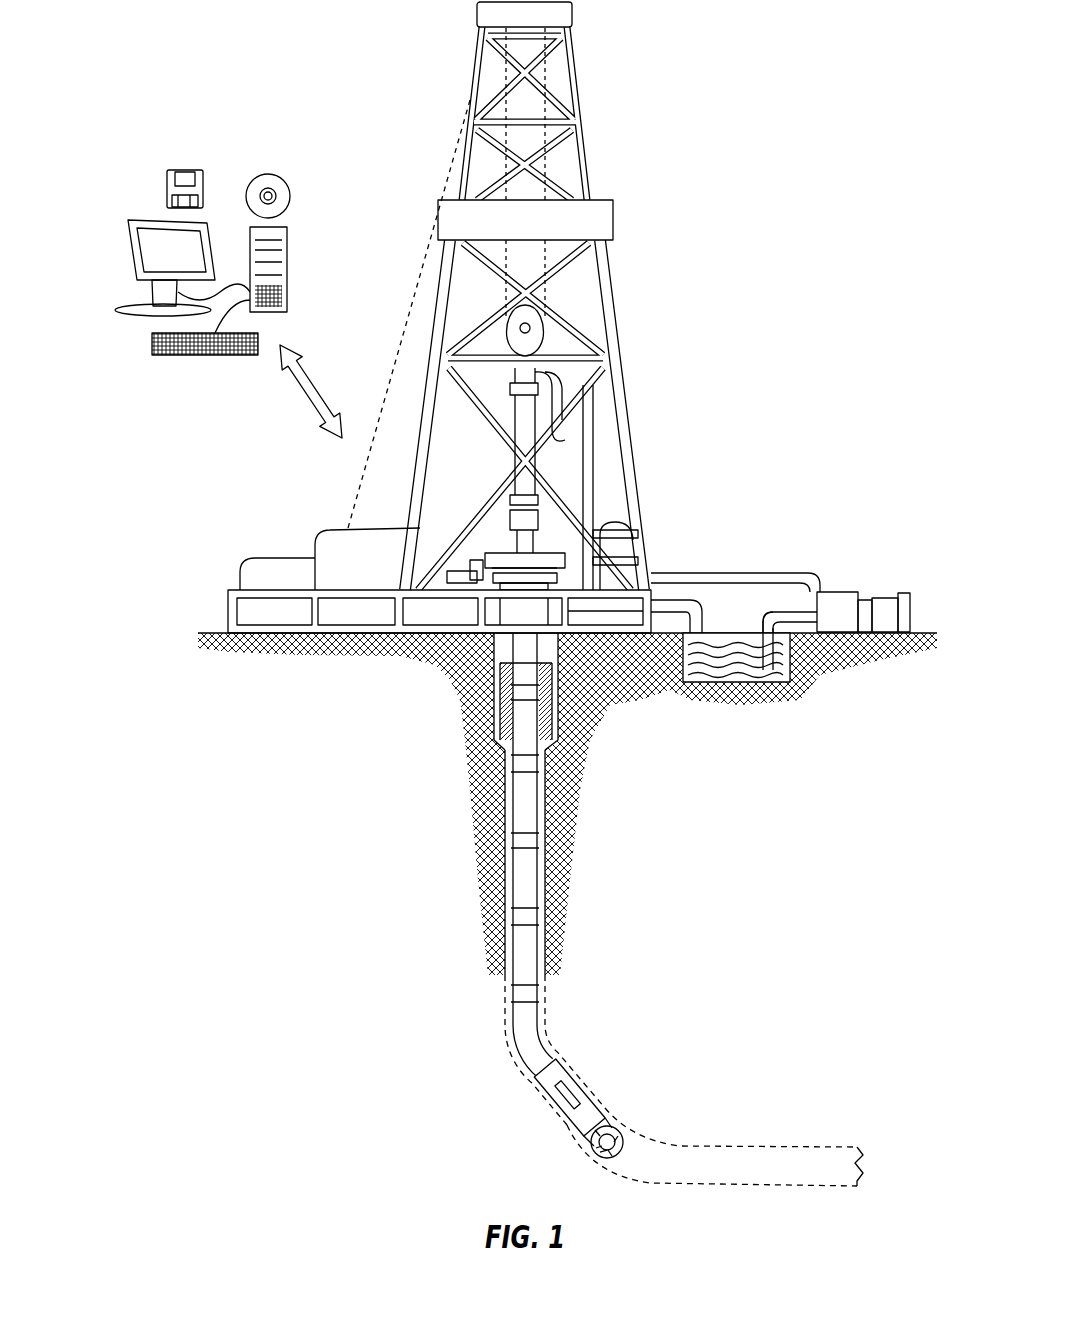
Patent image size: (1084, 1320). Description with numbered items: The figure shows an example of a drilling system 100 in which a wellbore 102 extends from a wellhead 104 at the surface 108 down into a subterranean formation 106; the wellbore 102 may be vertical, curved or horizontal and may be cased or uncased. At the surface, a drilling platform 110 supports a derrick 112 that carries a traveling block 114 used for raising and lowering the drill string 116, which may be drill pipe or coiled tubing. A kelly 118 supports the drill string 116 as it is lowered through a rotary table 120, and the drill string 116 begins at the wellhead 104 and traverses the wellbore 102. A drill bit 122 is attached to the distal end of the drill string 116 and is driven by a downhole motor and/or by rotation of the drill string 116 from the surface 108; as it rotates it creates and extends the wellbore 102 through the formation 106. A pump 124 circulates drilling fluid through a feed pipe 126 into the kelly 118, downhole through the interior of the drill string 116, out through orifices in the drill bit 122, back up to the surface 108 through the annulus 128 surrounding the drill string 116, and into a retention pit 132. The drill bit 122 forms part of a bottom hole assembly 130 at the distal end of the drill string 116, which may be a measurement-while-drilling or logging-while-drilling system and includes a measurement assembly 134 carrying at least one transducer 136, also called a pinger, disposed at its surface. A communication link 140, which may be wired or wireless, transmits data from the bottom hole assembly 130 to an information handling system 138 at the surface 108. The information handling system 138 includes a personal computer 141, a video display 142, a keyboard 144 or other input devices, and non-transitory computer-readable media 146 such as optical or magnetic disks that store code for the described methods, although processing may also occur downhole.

The drilling system 100 is at (848, 90).
The wellbore 102 is at (545, 833).
The wellhead 104 is at (572, 578).
The subterranean formation 106 is at (774, 928).
The surface 108 is at (923, 632).
The drilling platform 110 is at (228, 615).
The derrick 112 is at (583, 143).
The traveling block 114 is at (545, 330).
The drill string 116 is at (535, 820).
The kelly 118 is at (525, 415).
The rotary table 120 is at (560, 547).
The drill bit 122 is at (623, 1127).
The pump 124 is at (848, 592).
The feed pipe 126 is at (763, 572).
The annulus 128 is at (505, 838).
The bottom hole assembly 130 is at (532, 1098).
The retention pit 132 is at (732, 667).
The measurement assembly 134 is at (568, 1068).
The transducer 136 is at (580, 1088).
The information handling system 138 is at (202, 267).
The communication link 140 is at (292, 400).
The personal computer 141 is at (288, 242).
The video display 142 is at (130, 258).
The keyboard 144 is at (163, 360).
The non-transitory computer-readable media 146 is at (265, 172).